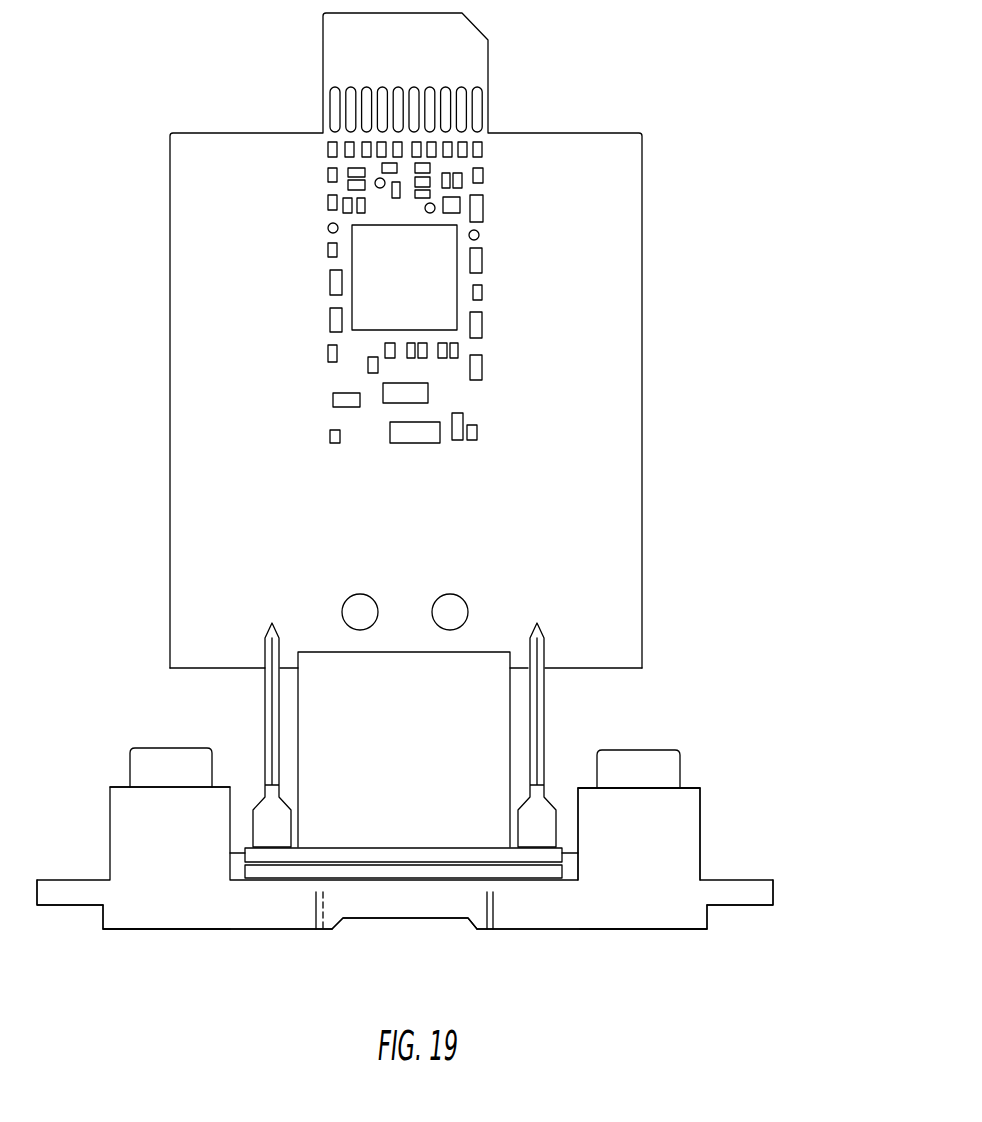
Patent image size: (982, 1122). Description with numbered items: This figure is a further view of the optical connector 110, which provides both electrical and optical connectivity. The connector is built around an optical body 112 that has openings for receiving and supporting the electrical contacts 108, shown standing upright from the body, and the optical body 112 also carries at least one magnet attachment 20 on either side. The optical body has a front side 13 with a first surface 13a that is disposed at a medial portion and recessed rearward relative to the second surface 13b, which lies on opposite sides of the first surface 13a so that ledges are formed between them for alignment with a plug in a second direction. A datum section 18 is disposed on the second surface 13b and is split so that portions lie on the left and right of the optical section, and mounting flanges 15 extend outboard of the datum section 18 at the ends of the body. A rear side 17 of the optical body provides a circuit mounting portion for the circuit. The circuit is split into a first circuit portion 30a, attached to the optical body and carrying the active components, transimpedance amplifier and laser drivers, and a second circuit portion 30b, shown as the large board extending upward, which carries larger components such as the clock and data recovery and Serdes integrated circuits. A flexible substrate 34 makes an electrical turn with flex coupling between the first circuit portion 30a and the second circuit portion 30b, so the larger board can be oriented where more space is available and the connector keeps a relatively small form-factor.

The second circuit portion 30b is at (625, 365).
The first circuit portion 30a is at (423, 853).
The electrical contacts 108 is at (266, 652).
The flexible substrate 34 is at (307, 700).
The rear side 17 is at (557, 781).
The magnet attachment 20 is at (143, 772).
The optical connector 110 is at (760, 751).
The optical body 112 is at (692, 842).
The front side 13 is at (472, 940).
The first surface 13a is at (343, 918).
The second surface 13b is at (258, 929).
The datum section 18 is at (213, 929).
The mounting flanges 15 is at (43, 907).